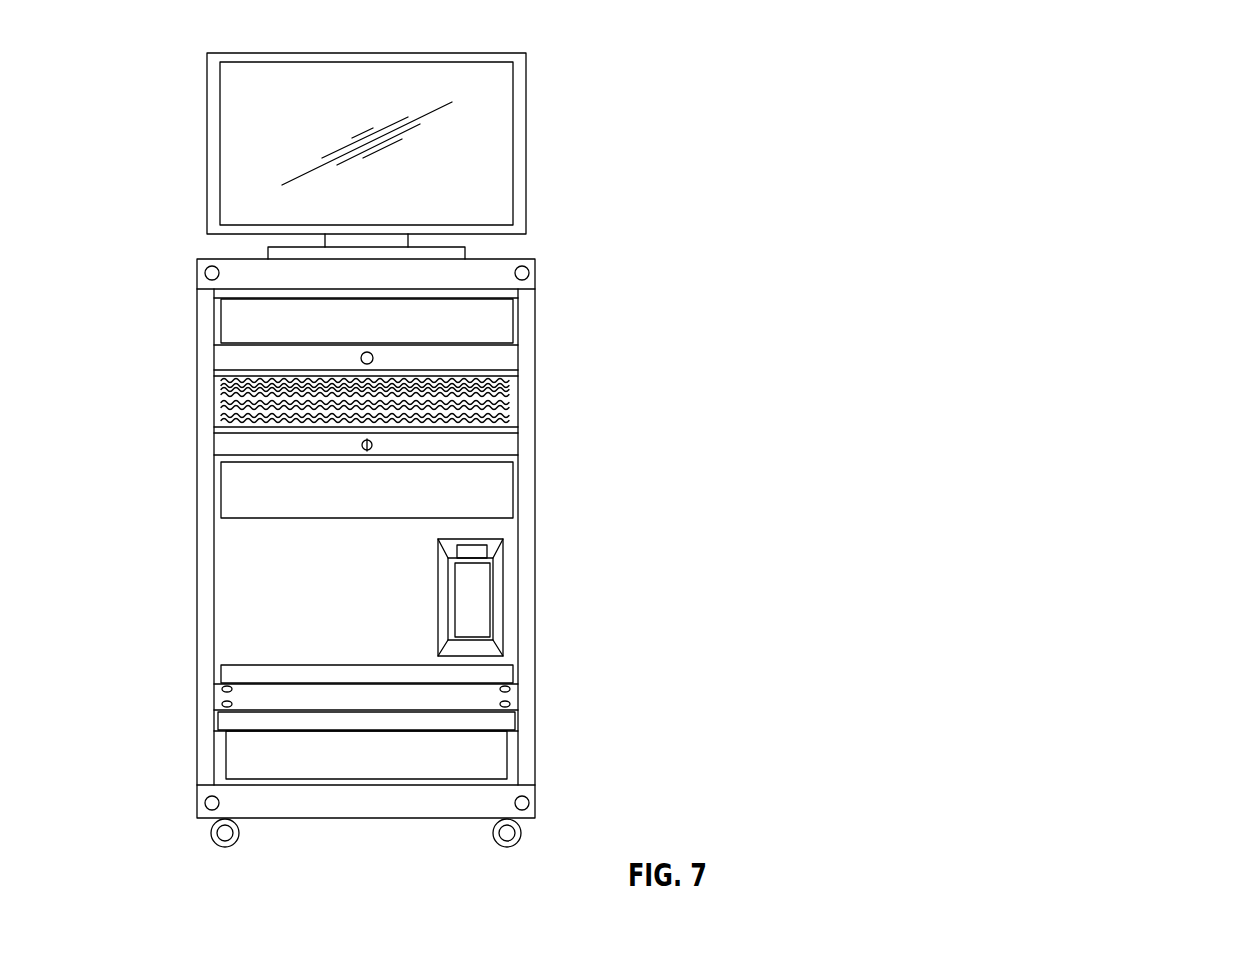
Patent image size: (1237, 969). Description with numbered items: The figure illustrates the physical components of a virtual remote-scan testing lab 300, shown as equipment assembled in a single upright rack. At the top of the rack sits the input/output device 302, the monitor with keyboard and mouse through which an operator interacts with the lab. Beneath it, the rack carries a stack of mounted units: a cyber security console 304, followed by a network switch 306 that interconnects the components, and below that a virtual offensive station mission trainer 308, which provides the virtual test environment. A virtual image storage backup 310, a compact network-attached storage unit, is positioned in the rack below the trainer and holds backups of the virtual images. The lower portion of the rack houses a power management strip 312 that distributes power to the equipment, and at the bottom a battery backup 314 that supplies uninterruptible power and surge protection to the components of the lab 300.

The virtual remote-scan testing lab 300 is at (1106, 40).
The input/output device 302 is at (207, 145).
The cyber security console 304 is at (214, 320).
The network switch 306 is at (213, 402).
The virtual offensive station mission trainer 308 is at (213, 490).
The virtual image storage backup 310 is at (505, 570).
The power management strip 312 is at (213, 700).
The battery backup 314 is at (213, 757).